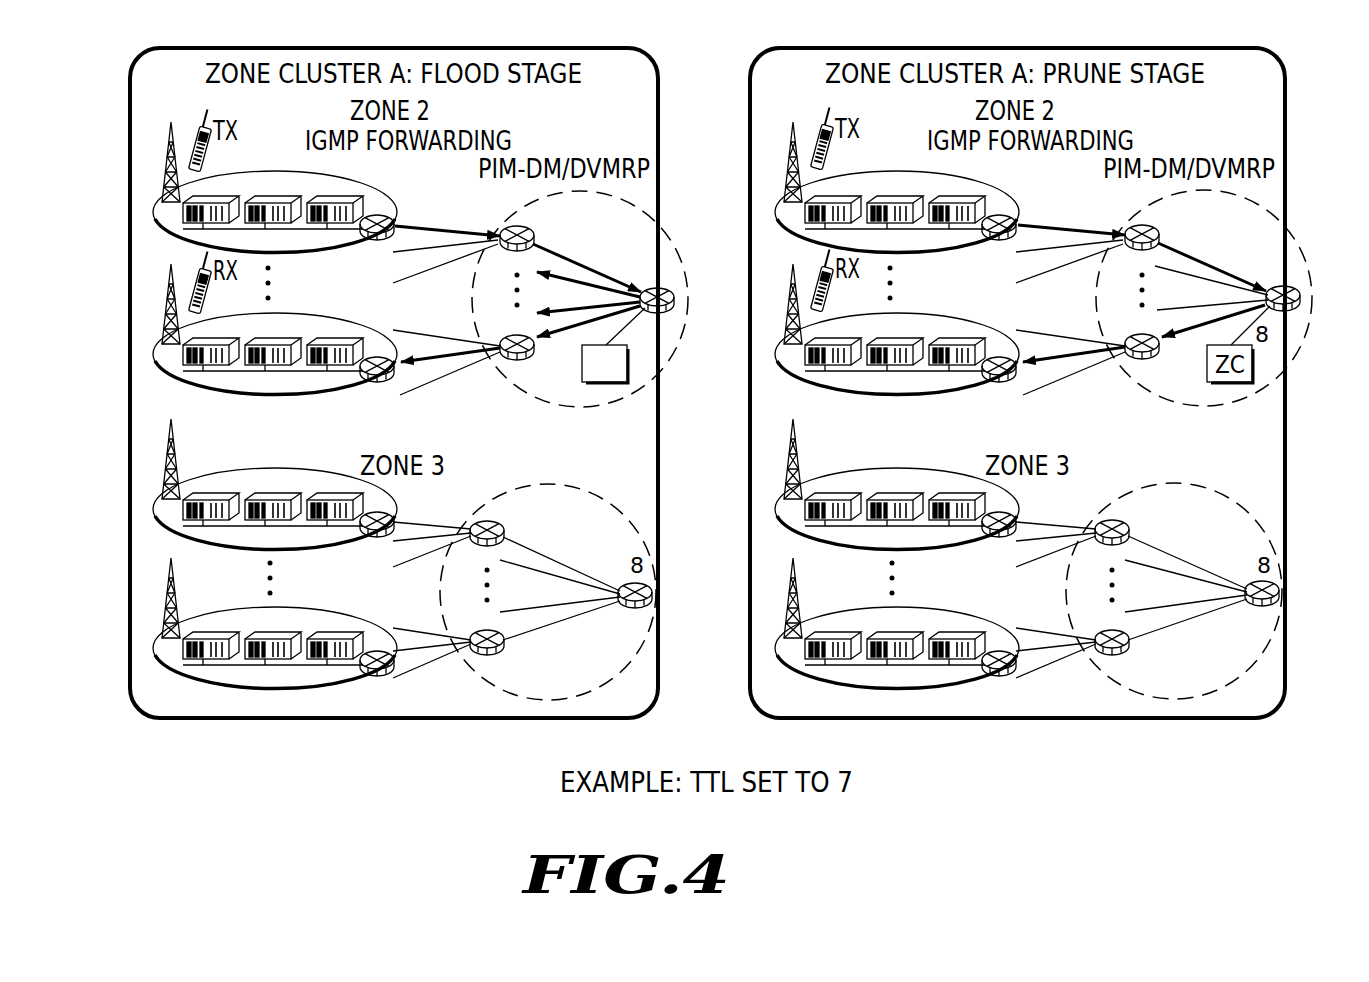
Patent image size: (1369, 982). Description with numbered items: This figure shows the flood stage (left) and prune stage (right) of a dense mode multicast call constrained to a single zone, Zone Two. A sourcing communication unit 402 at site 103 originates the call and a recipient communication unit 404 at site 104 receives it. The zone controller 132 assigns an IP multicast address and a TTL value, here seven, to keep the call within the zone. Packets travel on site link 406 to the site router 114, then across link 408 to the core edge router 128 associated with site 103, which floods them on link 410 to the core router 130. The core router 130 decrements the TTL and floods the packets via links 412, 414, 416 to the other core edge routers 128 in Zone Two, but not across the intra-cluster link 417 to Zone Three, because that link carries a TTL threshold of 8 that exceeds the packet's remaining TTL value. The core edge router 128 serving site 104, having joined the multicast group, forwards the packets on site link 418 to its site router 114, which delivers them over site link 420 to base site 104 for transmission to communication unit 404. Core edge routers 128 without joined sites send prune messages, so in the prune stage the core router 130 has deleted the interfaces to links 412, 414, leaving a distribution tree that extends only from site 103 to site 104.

The sourcing site 103 is at (231, 208).
The participating site 104 is at (231, 345).
The site router 114 is at (374, 245).
The core edge router 128 is at (535, 236).
The core router 130 is at (670, 297).
The zone controller 132 is at (592, 386).
The communication unit 402 is at (207, 154).
The communication unit 404 is at (207, 296).
The site link 406 is at (290, 232).
The link 408 is at (431, 222).
The link 410 is at (590, 268).
The link 412 is at (592, 284).
The link 414 is at (588, 302).
The link 416 is at (566, 340).
The intra-cluster link 417 is at (647, 472).
The site link 418 is at (430, 355).
The site link 420 is at (280, 372).
The TTL threshold 8 is at (637, 334).